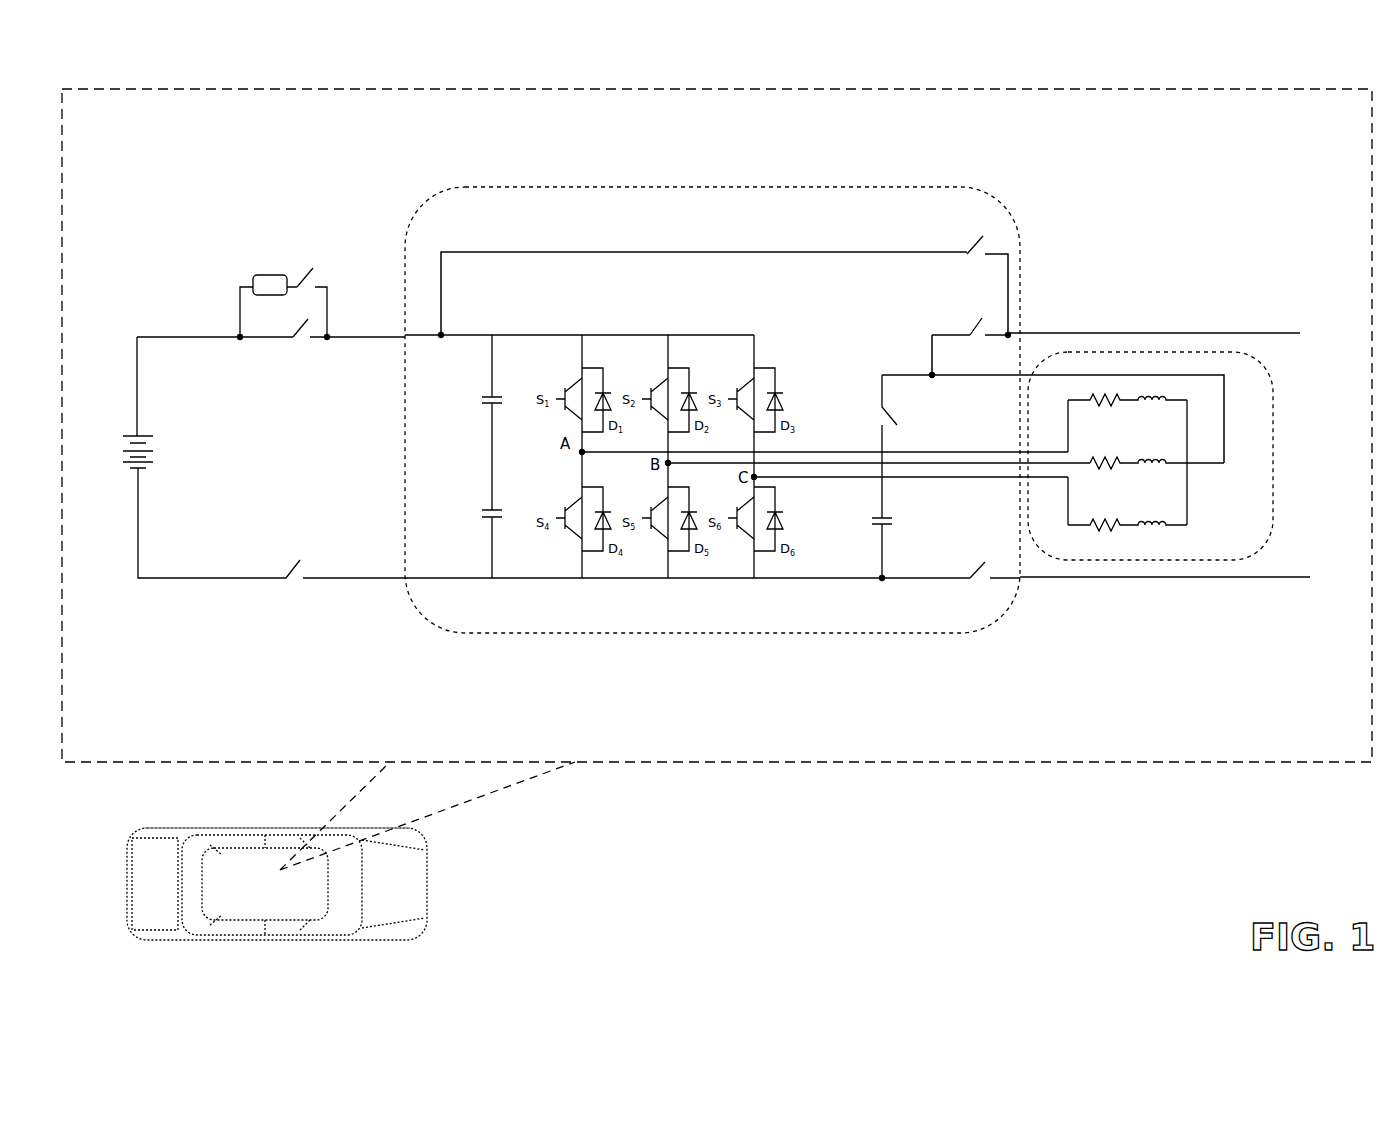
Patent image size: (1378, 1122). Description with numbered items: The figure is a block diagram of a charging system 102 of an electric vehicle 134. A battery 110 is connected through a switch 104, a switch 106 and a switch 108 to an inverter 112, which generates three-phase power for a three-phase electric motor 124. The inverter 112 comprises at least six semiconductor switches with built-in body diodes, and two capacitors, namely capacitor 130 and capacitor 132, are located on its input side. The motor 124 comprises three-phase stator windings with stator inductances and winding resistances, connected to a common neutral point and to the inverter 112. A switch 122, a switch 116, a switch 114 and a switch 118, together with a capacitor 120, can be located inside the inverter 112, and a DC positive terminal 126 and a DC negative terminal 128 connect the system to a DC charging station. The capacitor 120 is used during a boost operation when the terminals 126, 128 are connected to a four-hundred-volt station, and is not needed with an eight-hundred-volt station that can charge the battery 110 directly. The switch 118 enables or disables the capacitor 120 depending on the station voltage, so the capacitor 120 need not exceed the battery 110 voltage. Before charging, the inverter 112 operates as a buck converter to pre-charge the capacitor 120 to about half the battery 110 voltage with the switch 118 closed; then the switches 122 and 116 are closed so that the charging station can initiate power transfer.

The charging system 102 is at (1140, 86).
The switch 104 is at (288, 256).
The switch 106 is at (291, 343).
The switch 108 is at (283, 589).
The battery 110 is at (164, 454).
The inverter 112 is at (790, 185).
The switch 114 is at (963, 261).
The switch 116 is at (959, 321).
The switch 118 is at (879, 407).
The capacitor 120 is at (871, 538).
The switch 122 is at (978, 590).
The three-phase electric motor 124 is at (1117, 350).
The DC positive terminal 126 is at (1339, 311).
The DC negative terminal 128 is at (1343, 595).
The capacitor 130 is at (473, 412).
The capacitor 132 is at (471, 526).
The vehicle 134 is at (427, 891).